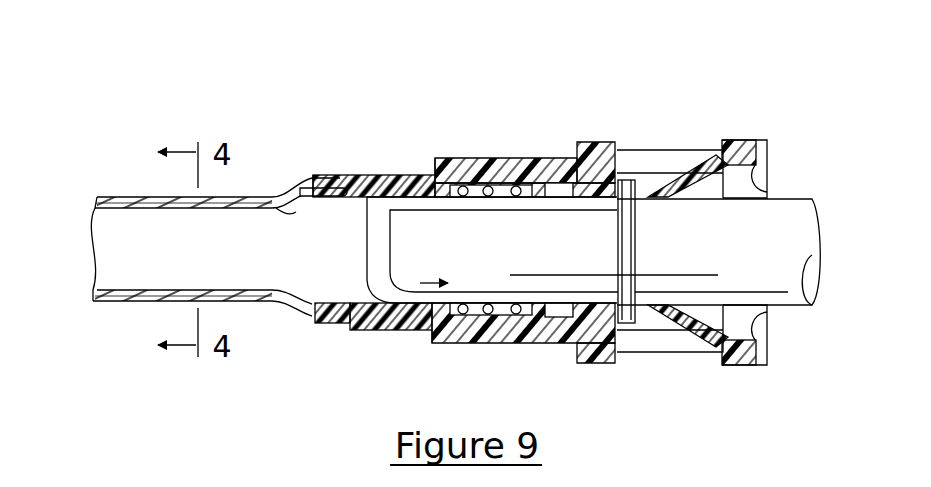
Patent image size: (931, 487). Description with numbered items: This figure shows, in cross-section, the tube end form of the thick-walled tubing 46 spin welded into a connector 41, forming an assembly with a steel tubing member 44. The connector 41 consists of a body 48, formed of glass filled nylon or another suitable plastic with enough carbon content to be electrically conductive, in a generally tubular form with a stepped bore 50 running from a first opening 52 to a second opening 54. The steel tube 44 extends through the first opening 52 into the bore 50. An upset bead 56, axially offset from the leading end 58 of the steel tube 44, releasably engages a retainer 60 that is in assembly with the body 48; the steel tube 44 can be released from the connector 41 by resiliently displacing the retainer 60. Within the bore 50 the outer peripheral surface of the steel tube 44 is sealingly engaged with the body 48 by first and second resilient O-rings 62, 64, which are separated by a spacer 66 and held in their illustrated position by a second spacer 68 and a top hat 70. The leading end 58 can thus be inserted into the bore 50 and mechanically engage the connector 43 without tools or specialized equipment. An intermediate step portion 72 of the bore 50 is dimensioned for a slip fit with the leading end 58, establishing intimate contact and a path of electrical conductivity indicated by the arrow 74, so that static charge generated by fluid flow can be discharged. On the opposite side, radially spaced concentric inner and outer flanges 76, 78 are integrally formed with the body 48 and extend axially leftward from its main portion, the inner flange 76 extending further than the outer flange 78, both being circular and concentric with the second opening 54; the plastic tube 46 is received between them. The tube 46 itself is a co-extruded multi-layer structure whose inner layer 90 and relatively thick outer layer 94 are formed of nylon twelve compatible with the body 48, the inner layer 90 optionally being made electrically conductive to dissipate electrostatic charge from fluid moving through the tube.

The connector 41 is at (531, 138).
The connector 43 is at (600, 139).
The steel tubing member 44 is at (790, 196).
The thick-walled tubing 46 is at (122, 193).
The body 48 is at (598, 362).
The stepped bore 50 is at (334, 188).
The first opening 52 is at (762, 156).
The second opening 54 is at (276, 194).
The upset bead 56 is at (628, 180).
The leading end 58 is at (377, 331).
The retainer 60 is at (700, 166).
The first resilient O-ring 62 is at (463, 315).
The second resilient O-ring 64 is at (518, 315).
The spacer 66 is at (488, 315).
The second spacer 68 is at (556, 318).
The top hat 70 is at (620, 336).
The intermediate step portion 72 is at (433, 196).
The arrow 74 is at (410, 333).
The inner flange 76 is at (295, 314).
The outer flange 78 is at (332, 323).
The inner layer 90 is at (105, 301).
The outer layer 94 is at (143, 302).